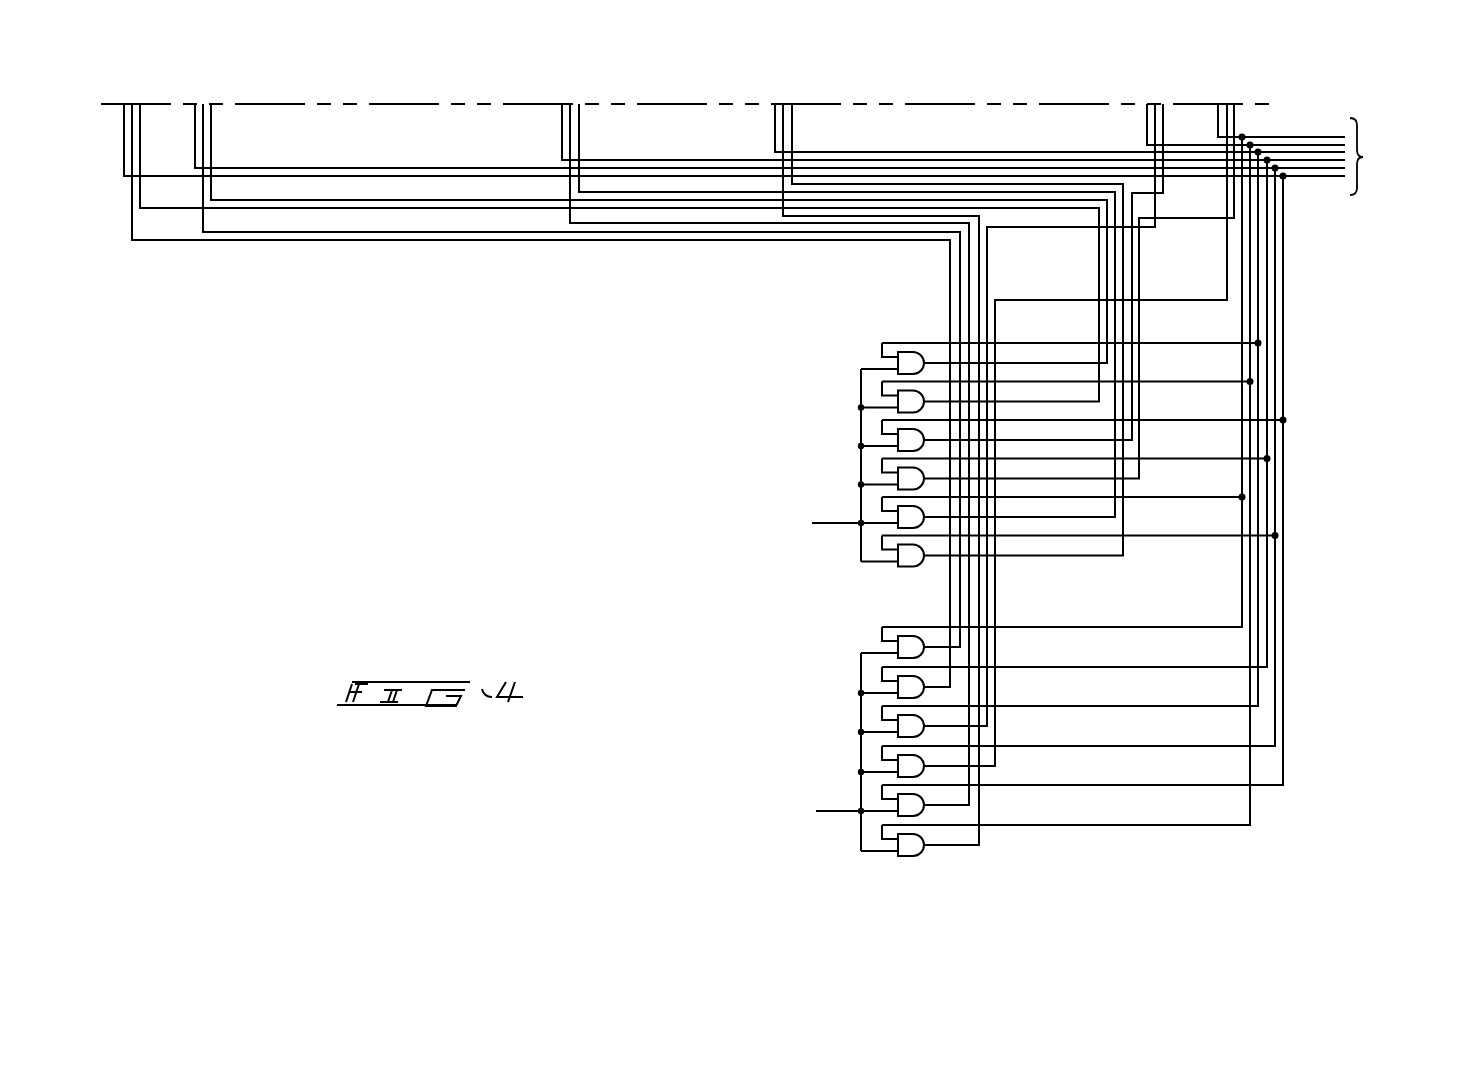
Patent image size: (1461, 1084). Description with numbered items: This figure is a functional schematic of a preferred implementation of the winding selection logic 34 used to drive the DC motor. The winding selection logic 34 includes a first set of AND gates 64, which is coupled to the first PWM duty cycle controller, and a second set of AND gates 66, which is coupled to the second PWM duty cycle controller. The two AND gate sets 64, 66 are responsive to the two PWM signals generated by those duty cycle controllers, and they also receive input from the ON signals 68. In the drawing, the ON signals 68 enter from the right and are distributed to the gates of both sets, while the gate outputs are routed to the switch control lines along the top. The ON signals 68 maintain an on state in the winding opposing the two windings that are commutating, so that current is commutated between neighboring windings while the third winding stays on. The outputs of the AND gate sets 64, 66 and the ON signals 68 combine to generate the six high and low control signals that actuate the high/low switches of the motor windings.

The winding selection logic 34 is at (692, 406).
The first set of AND gates 64 is at (856, 342).
The second set of AND gates 66 is at (857, 639).
The ON signals 68 is at (1328, 203).